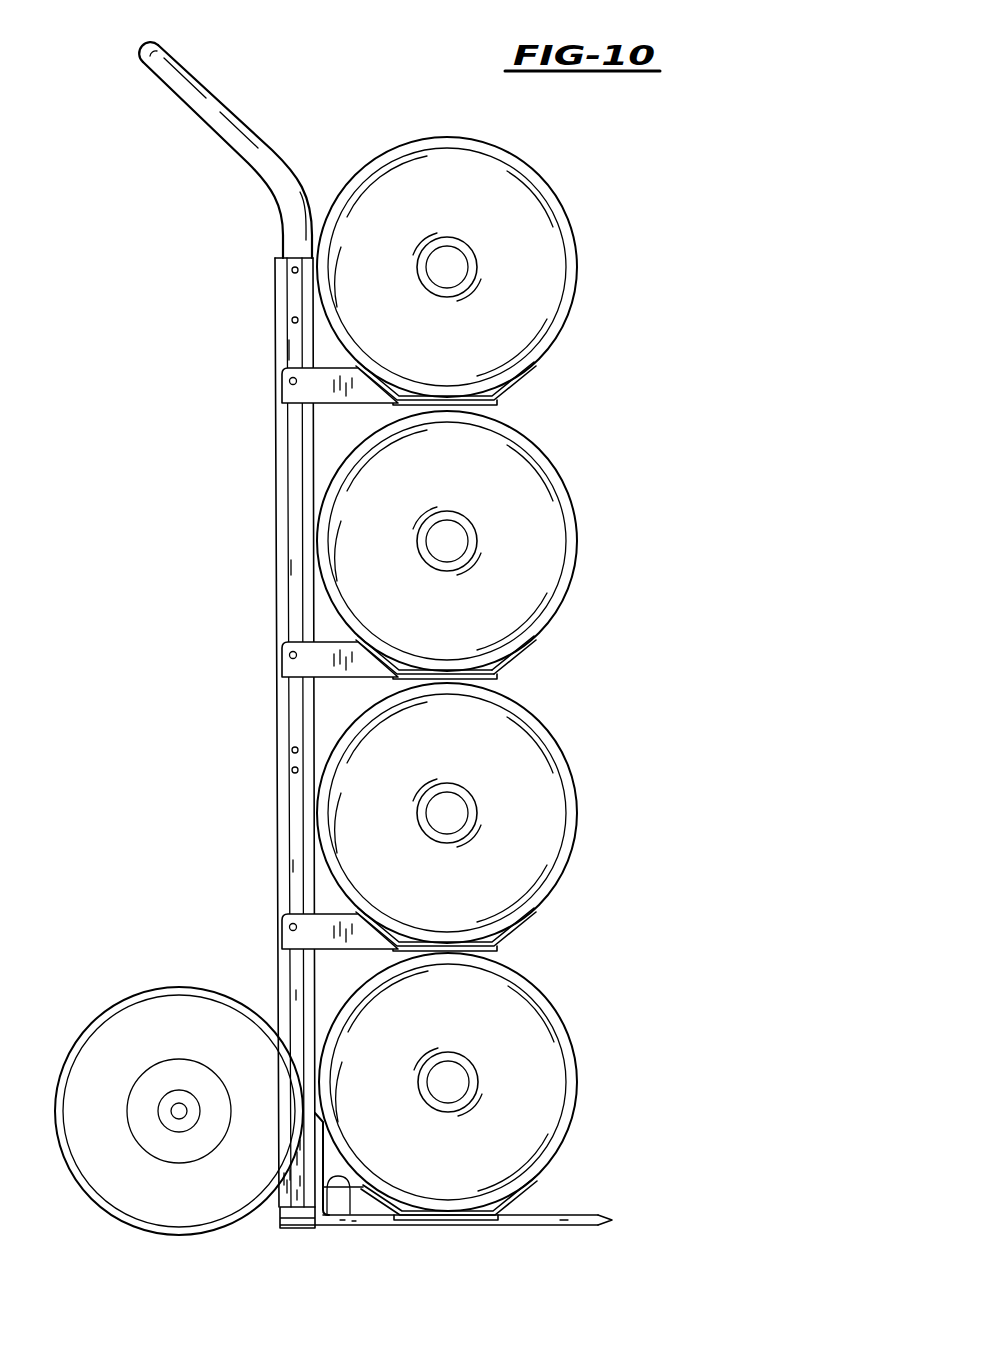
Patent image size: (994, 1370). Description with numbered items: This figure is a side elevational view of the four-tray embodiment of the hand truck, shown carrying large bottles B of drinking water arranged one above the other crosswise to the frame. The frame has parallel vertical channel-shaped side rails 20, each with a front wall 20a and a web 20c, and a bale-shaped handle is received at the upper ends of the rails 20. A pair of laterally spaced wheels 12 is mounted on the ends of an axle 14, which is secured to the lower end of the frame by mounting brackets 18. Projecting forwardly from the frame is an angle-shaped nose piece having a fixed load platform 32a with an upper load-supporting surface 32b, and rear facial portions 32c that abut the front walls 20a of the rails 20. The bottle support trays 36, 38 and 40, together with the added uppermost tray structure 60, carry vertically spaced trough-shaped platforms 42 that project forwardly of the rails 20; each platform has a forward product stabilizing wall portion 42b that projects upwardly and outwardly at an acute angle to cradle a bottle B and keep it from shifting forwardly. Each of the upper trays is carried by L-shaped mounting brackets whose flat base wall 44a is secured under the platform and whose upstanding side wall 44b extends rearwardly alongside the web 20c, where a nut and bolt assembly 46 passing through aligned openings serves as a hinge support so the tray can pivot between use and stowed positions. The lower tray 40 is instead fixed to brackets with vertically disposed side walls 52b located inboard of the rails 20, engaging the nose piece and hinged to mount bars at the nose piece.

The bottles B is at (581, 279).
The wheels 12 is at (158, 1233).
The axle 14 is at (168, 1093).
The mounting brackets 18 is at (297, 1187).
The side rails 20 is at (276, 750).
The front wall 20a is at (315, 720).
The web 20c is at (291, 603).
The fixed load platform 32a is at (524, 1226).
The upper load-supporting surface 32b is at (576, 1214).
The rear facial portions 32c is at (350, 1228).
The bottle support tray 36 is at (572, 632).
The bottle support tray 38 is at (554, 927).
The lower bottle tray 40 is at (554, 1196).
The platforms 42 is at (524, 671).
The forward product stabilizing wall portion 42b is at (556, 373).
The base wall 44a is at (478, 954).
The sidewall 44b is at (282, 403).
The nut and bolt assembly 46 is at (289, 381).
The side walls 52b is at (393, 1222).
The uppermost tray structure 60 is at (541, 392).